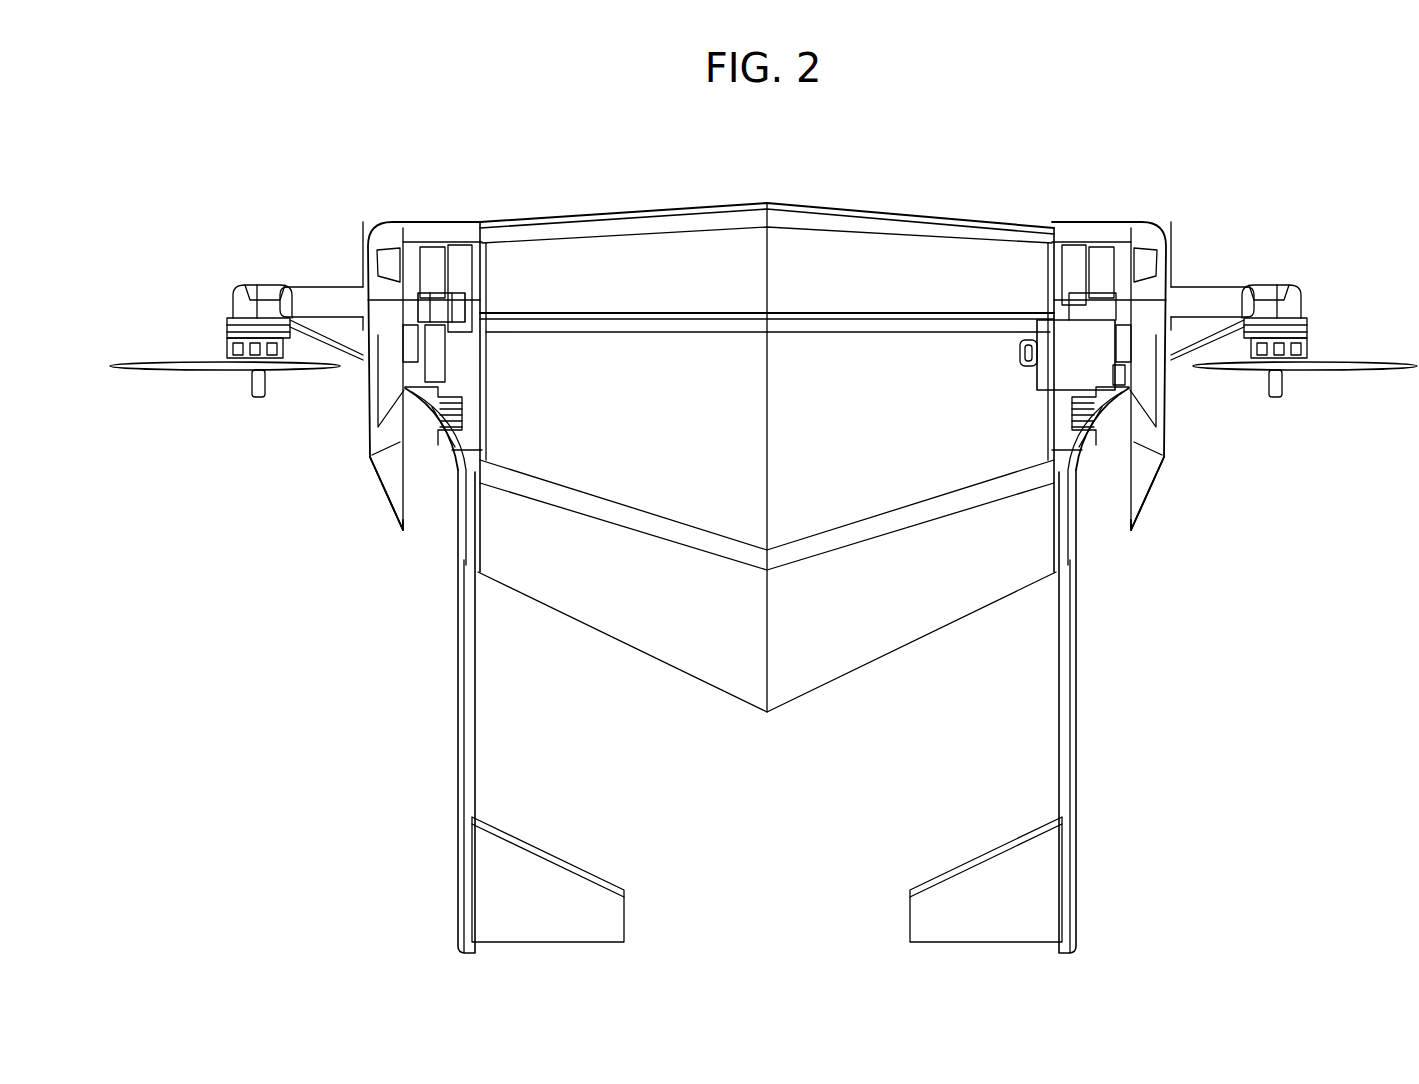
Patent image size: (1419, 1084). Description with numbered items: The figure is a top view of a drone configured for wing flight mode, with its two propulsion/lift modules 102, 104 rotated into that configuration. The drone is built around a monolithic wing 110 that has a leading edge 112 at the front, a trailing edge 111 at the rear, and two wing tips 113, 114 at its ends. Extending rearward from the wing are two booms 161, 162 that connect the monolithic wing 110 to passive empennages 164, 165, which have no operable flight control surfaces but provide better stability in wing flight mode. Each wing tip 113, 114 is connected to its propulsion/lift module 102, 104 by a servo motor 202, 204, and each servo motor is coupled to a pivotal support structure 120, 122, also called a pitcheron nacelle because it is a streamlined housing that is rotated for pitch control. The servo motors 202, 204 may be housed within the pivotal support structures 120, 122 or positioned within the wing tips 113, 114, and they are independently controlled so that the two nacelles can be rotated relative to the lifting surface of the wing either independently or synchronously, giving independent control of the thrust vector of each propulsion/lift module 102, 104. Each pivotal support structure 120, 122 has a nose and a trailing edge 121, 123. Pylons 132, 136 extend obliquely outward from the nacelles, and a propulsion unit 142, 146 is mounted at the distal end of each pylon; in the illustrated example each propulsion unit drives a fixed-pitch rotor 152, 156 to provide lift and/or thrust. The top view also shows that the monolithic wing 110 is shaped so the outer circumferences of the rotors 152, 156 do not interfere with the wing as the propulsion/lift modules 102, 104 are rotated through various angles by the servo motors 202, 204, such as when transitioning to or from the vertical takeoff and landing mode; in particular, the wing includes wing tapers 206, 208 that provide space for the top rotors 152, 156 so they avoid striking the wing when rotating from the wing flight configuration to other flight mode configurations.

The propulsion/lift module 102 is at (282, 414).
The propulsion/lift module 104 is at (1228, 425).
The monolithic wing 110 is at (690, 255).
The trailing edge 111 is at (893, 660).
The leading edge 112 is at (803, 198).
The wing tip 113 is at (504, 252).
The wing tip 114 is at (1030, 252).
The pivotal support structure 120 is at (386, 238).
The trailing edge 121 is at (400, 528).
The pivotal support structure 122 is at (1153, 236).
The trailing edge 123 is at (1136, 526).
The pylon 132 is at (320, 290).
The pylon 136 is at (1212, 292).
The propulsion unit 142 is at (248, 330).
The propulsion unit 146 is at (1300, 332).
The fixed-pitch rotor 152 is at (197, 368).
The fixed-pitch rotor 156 is at (1332, 370).
The boom 161 is at (470, 768).
The boom 162 is at (1066, 768).
The empennage 164 is at (580, 898).
The empennage 165 is at (945, 898).
The servo motor 202 is at (431, 300).
The servo motor 204 is at (1099, 305).
The wing taper 206 is at (426, 495).
The wing taper 208 is at (1110, 500).